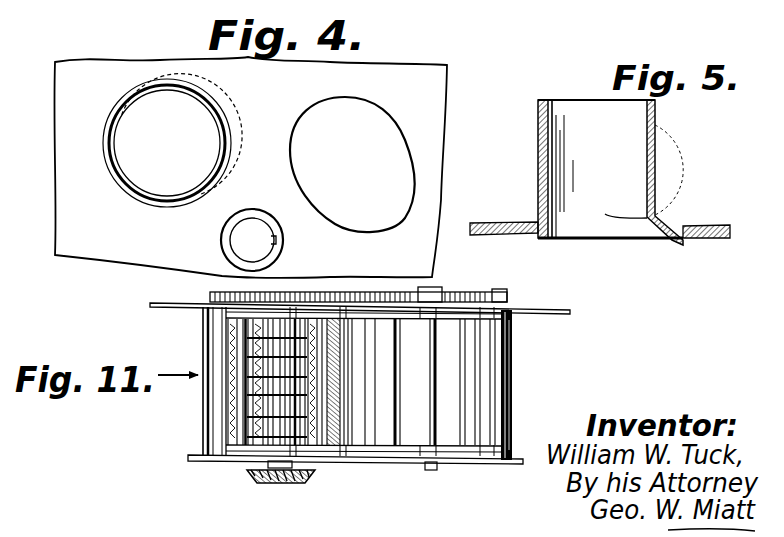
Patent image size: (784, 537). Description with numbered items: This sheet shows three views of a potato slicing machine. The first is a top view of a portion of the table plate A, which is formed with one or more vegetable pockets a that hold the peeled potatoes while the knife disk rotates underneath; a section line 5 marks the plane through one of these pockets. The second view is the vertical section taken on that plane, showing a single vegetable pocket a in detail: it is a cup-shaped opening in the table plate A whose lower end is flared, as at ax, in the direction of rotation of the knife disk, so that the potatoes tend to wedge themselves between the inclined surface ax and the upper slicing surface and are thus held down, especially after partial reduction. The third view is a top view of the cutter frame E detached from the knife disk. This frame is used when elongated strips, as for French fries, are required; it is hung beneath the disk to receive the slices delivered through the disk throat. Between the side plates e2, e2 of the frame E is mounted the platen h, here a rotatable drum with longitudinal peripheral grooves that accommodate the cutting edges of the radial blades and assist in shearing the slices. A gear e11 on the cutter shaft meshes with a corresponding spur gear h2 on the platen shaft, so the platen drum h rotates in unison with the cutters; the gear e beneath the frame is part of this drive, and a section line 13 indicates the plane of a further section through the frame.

In FIG. 4, the section line 5— 5 is at (246, 64).
In FIG. 4, the vegetable pocket a is at (172, 140).
In FIG. 5, the vegetable pocket a is at (610, 172).
In FIG. 4, the table plate A is at (250, 167).
In FIG. 5, the table plate A is at (600, 215).
In FIG. 5, the flared lower end of holder pocket ax is at (654, 242).
In FIG. 11, the cutter frame E is at (360, 404).
In FIG. 11, the gear wheel e is at (281, 485).
In FIG. 11, the platen h is at (361, 382).
In FIG. 11, the spur gear h2 is at (481, 299).
In FIG. 11, the gear e11 is at (211, 293).
In FIG. 11, the side plates e2 is at (518, 308).
In FIG. 11, the section line 13— 13 is at (563, 349).